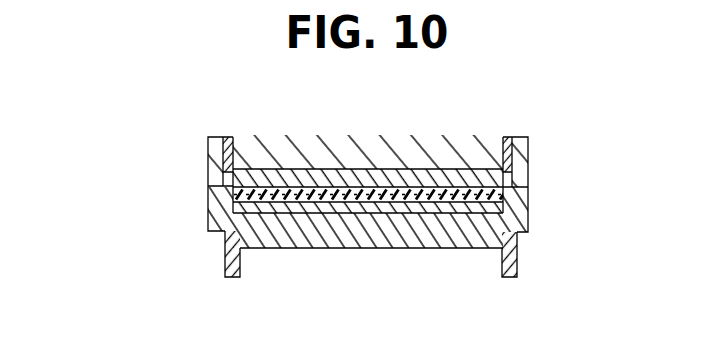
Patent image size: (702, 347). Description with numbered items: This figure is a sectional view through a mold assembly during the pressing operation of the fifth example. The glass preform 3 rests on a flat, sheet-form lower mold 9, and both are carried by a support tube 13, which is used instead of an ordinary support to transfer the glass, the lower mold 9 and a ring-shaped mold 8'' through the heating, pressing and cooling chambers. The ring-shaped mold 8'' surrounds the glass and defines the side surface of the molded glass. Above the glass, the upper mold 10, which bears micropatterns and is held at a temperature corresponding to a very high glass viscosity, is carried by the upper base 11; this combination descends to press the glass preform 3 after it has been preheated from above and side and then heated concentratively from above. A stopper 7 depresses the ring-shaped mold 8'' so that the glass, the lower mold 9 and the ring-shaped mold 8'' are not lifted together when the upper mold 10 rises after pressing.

The glass preform 3 is at (378, 195).
The stopper 7 is at (521, 158).
The ring-shaped mold 8'' is at (421, 218).
The lower mold 9 is at (456, 212).
The upper mold 10 is at (291, 170).
The upper base 11 is at (461, 156).
The support tube 13 is at (514, 255).